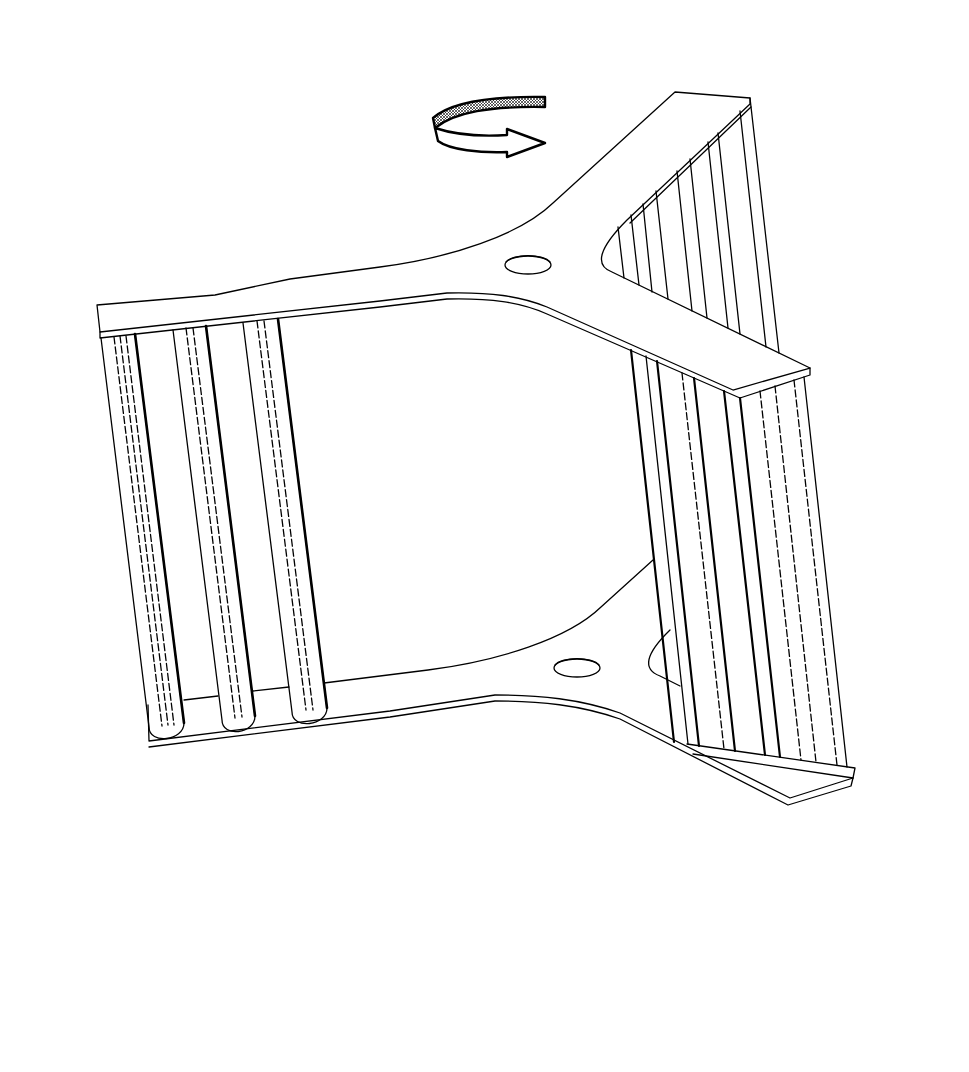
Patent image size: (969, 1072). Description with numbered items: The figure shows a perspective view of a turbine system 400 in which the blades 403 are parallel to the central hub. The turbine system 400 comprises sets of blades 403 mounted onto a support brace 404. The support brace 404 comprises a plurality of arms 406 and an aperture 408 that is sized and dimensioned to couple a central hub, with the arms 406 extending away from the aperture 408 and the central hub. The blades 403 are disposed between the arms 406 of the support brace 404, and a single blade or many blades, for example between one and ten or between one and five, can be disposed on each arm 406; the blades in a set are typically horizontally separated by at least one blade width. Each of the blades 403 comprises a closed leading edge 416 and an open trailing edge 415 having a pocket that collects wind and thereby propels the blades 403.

The turbine system 400 is at (183, 74).
The support brace 404 is at (498, 252).
The arms 406 is at (225, 298).
The blades 403 is at (119, 499).
The aperture 408 is at (568, 661).
The closed leading edge 416 is at (167, 661).
The open trailing edge 415 is at (769, 758).